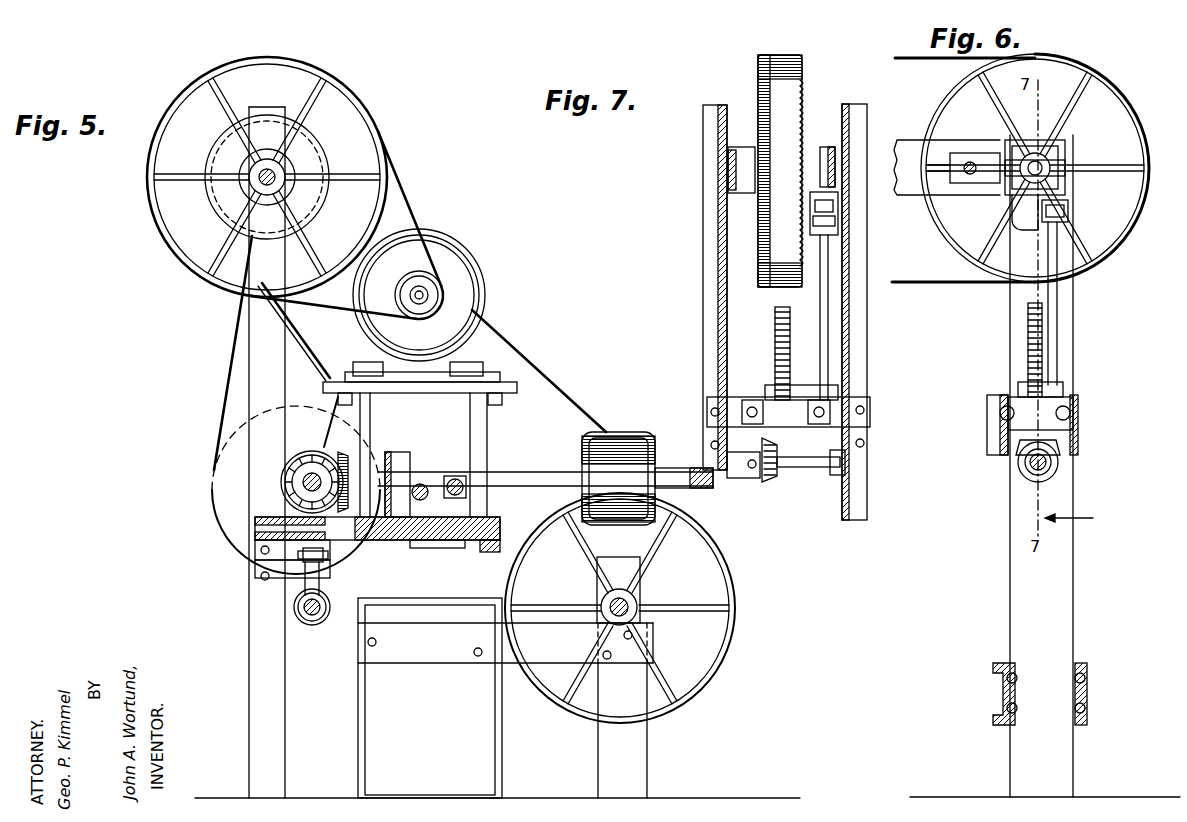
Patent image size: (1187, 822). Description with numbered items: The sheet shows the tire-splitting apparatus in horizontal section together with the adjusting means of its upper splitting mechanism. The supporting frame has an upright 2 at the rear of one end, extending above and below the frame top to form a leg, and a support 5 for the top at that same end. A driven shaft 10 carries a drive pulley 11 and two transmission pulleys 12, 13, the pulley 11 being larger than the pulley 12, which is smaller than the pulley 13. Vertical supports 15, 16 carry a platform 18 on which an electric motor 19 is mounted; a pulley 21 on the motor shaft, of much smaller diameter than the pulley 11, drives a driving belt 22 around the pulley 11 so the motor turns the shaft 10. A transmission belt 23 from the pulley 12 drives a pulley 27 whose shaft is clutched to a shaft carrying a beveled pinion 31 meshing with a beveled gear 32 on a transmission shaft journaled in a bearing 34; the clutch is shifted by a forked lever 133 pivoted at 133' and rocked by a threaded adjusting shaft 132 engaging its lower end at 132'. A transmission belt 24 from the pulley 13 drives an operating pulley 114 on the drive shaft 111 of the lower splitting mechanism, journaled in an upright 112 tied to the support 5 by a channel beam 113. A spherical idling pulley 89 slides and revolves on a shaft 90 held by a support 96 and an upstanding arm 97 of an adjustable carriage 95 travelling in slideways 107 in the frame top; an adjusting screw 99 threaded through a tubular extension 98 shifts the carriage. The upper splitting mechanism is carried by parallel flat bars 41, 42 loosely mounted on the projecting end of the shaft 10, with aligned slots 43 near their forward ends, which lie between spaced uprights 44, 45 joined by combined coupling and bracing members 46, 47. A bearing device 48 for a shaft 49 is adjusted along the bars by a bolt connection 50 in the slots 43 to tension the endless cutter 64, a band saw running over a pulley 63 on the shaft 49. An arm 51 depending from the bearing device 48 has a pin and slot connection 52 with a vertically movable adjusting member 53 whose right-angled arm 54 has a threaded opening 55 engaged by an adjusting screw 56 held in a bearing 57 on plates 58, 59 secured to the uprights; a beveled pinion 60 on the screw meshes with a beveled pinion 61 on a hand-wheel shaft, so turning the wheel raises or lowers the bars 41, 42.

In FIG. 5, the upright 2 is at (262, 343).
In FIG. 5, the support 5 is at (503, 720).
In FIG. 5, the driven shaft 10 is at (256, 170).
In FIG. 5, the drive pulley 11 is at (363, 122).
In FIG. 5, the transmission pulley 12 is at (295, 190).
In FIG. 5, the transmission pulley 13 is at (308, 150).
In FIG. 5, the vertical support 15 is at (365, 428).
In FIG. 5, the vertical support 16 is at (488, 418).
In FIG. 5, the platform 18 is at (520, 382).
In FIG. 5, the electric motor 19 is at (463, 258).
In FIG. 5, the pulley 21 is at (430, 293).
In FIG. 5, the driving belt 22 is at (414, 197).
In FIG. 5, the transmission belt 23 is at (215, 378).
In FIG. 5, the transmission belt 24 is at (532, 352).
In FIG. 5, the pulley 27 is at (232, 426).
In FIG. 5, the beveled pinion 31 is at (306, 452).
In FIG. 5, the beveled gear 32 is at (333, 471).
In FIG. 5, the bearing 34 is at (380, 574).
In FIG. 5, the idling pulley 89 is at (628, 438).
In FIG. 5, the shaft 90 is at (511, 472).
In FIG. 5, the adjustable carriage 95 is at (497, 505).
In FIG. 5, the support 96 is at (455, 478).
In FIG. 5, the upstanding arm 97 is at (398, 458).
In FIG. 5, the tubular extension 98 is at (421, 484).
In FIG. 5, the adjusting screw 99 is at (420, 548).
In FIG. 5, the slideways 107 is at (435, 578).
In FIG. 5, the drive shaft 111 is at (632, 600).
In FIG. 5, the upright 112 is at (632, 742).
In FIG. 5, the channel beam 113 is at (505, 698).
In FIG. 5, the operating pulley 114 is at (742, 580).
In FIG. 5, the adjusting shaft 132 is at (269, 597).
In FIG. 5, the threaded engagement 132' is at (268, 621).
In FIG. 5, the forked lever 133 is at (255, 563).
In FIG. 5, the pivot 133' is at (253, 550).
In FIG. 7, the flat bar 41 is at (706, 138).
In FIG. 7, the flat bar 42 is at (827, 146).
In FIG. 6, the flat bar 42 is at (945, 152).
In FIG. 6, the slot 43 is at (930, 150).
In FIG. 7, the upright 44 is at (730, 332).
In FIG. 7, the upright 45 is at (852, 312).
In FIG. 6, the upright 45 is at (1074, 300).
In FIG. 6, the combined coupling and bracing member 46 is at (995, 690).
In FIG. 6, the combined coupling and bracing member 47 is at (1087, 692).
In FIG. 6, the bearing device 48 is at (1063, 152).
In FIG. 6, the shaft 49 is at (1040, 152).
In FIG. 6, the bolt connection 50 is at (970, 176).
In FIG. 6, the arm 51 is at (1023, 222).
In FIG. 7, the pin and slot connection 52 is at (840, 222).
In FIG. 6, the pin and slot connection 52 is at (1070, 212).
In FIG. 7, the adjusting member 53 is at (830, 256).
In FIG. 6, the adjusting member 53 is at (1060, 232).
In FIG. 6, the arm 54 is at (1055, 386).
In FIG. 7, the opening 55 is at (783, 390).
In FIG. 6, the opening 55 is at (1018, 388).
In FIG. 7, the adjusting screw 56 is at (775, 338).
In FIG. 6, the adjusting screw 56 is at (1028, 334).
In FIG. 7, the bearing 57 is at (735, 420).
In FIG. 6, the bearing 57 is at (1063, 392).
In FIG. 6, the plate 58 is at (990, 428).
In FIG. 6, the plate 59 is at (1078, 428).
In FIG. 7, the beveled pinion 60 is at (806, 468).
In FIG. 6, the beveled pinion 60 is at (1025, 458).
In FIG. 7, the beveled pinion 61 is at (770, 484).
In FIG. 6, the beveled pinion 61 is at (1060, 462).
In FIG. 7, the pulley 63 is at (805, 102).
In FIG. 6, the pulley 63 is at (940, 102).
In FIG. 7, the endless cutter 64 is at (775, 96).
In FIG. 6, the endless cutter 64 is at (920, 60).